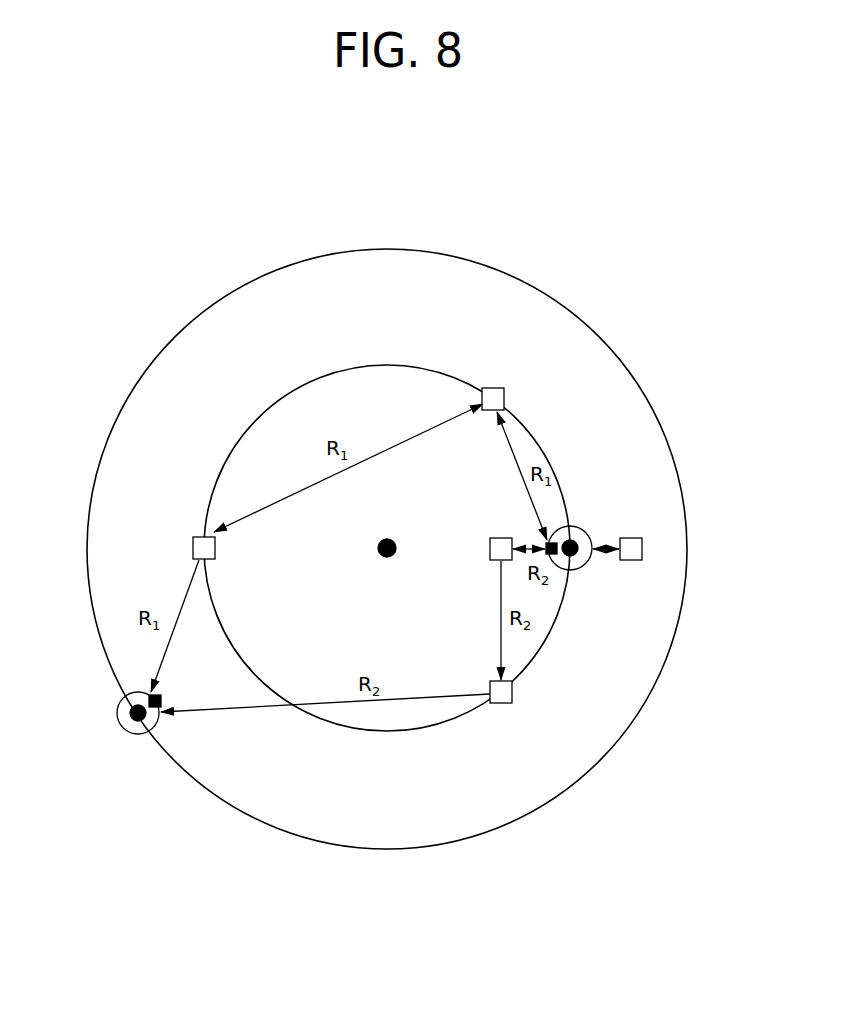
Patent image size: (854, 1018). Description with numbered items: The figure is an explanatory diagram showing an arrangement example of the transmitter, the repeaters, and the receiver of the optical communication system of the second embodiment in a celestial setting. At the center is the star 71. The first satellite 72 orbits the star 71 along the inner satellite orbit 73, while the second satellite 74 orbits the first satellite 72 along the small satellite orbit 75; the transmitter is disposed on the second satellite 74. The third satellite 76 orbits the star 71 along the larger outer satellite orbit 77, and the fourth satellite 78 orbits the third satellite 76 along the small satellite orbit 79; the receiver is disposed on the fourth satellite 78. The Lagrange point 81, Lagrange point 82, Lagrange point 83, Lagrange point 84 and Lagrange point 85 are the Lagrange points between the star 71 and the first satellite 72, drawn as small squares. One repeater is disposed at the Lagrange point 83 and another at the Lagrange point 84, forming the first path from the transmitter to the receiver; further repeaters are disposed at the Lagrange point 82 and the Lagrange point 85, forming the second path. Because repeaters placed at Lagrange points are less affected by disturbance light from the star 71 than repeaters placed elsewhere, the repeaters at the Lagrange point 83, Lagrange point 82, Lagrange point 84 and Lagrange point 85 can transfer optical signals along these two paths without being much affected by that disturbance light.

The star 71 is at (384, 560).
The first satellite 72 is at (573, 527).
The satellite orbit 73 is at (352, 365).
The second satellite 74 is at (546, 542).
The satellite orbit 75 is at (582, 568).
The third satellite 76 is at (126, 733).
The satellite orbit 77 is at (340, 250).
The fourth satellite 78 is at (163, 696).
The satellite orbit 79 is at (118, 705).
The Lagrange point 81 is at (646, 549).
The Lagrange point 82 is at (490, 549).
The Lagrange point 83 is at (496, 388).
The Lagrange point 84 is at (200, 537).
The Lagrange point 85 is at (503, 704).